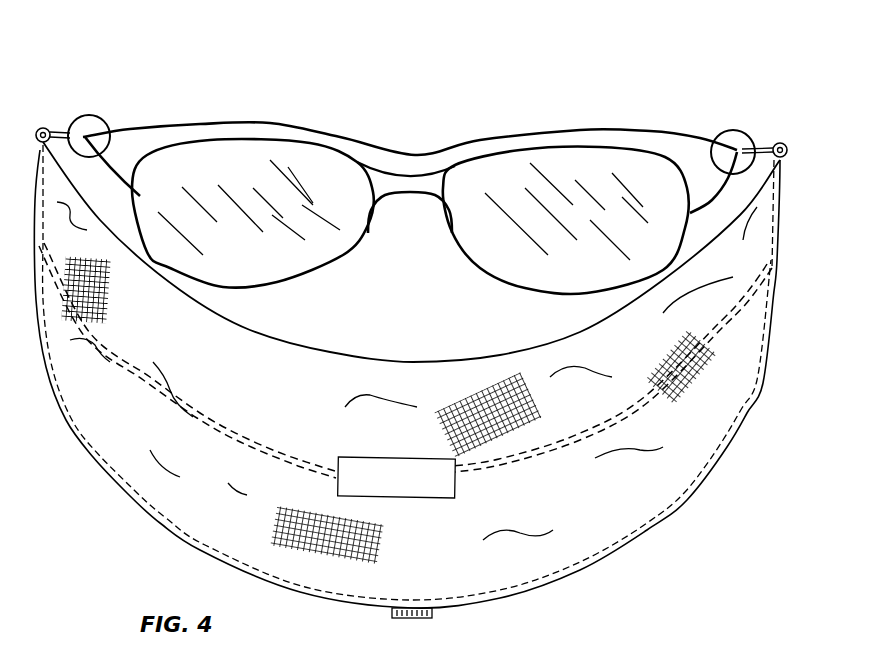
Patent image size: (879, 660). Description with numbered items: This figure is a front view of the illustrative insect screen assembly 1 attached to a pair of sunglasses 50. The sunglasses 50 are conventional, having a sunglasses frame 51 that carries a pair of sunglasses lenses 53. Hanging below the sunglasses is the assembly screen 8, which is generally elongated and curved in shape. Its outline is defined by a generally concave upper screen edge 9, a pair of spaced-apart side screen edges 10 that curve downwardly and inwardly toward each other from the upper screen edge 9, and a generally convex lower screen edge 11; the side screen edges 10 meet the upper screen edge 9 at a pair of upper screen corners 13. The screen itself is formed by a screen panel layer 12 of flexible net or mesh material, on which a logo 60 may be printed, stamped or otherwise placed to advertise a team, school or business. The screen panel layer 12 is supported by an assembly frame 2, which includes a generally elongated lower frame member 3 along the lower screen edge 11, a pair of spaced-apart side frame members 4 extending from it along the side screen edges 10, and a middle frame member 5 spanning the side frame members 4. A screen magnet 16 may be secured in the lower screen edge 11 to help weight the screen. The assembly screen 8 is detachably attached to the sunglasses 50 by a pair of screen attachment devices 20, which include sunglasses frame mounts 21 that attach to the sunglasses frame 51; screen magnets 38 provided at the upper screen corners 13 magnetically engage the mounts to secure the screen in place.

The insect screen assembly 1 is at (85, 53).
The assembly frame 2 is at (122, 494).
The lower frame member 3 is at (480, 586).
The side frame members 4 is at (777, 305).
The middle frame member 5 is at (425, 336).
The assembly screen 8 is at (455, 360).
The upper screen edge 9 is at (312, 350).
The side screen edges 10 is at (38, 256).
The lower screen edge 11 is at (305, 598).
The screen panel layer 12 is at (738, 432).
The upper screen corners 13 is at (85, 148).
The screen magnet 16 is at (413, 620).
The screen attachment devices 20 is at (78, 108).
The sunglasses frame mounts 21 is at (93, 128).
The screen magnets 38 is at (44, 127).
The sunglasses 50 is at (268, 126).
The sunglasses frame 51 is at (341, 144).
The sunglasses lenses 53 is at (477, 235).
The logo 60 is at (413, 457).